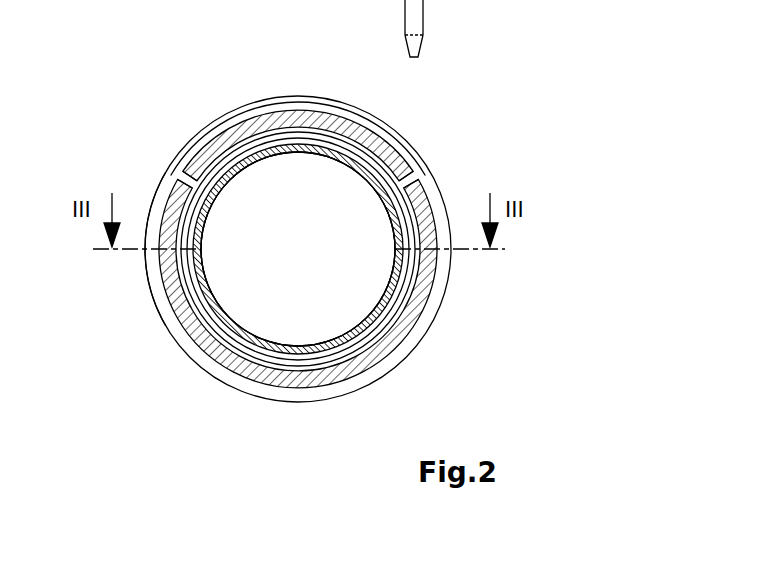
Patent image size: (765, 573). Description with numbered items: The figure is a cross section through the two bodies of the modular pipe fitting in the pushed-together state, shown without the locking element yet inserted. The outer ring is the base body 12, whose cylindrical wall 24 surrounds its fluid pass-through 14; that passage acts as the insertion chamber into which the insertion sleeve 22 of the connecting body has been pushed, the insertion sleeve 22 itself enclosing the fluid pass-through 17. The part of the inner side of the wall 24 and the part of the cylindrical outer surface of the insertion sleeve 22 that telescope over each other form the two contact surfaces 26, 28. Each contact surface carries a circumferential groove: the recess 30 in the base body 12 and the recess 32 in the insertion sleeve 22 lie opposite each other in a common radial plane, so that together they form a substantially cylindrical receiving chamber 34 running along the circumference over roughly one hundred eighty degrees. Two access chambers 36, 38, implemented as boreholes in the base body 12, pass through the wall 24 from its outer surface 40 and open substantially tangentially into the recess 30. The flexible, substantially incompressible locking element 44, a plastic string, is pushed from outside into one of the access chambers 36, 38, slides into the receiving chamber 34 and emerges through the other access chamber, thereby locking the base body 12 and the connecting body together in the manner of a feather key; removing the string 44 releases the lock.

The base body 12 is at (432, 370).
The fluid pass-through 14 is at (298, 249).
The fluid pass-through 17 is at (343, 235).
The insertion sleeve 22 is at (212, 213).
The wall 24 is at (424, 306).
The contact surface 26 is at (275, 141).
The contact surface 28 is at (241, 150).
The recess 30 is at (367, 126).
The recess 32 is at (160, 282).
The receiving chamber 34 is at (422, 212).
The access chamber 36 is at (410, 176).
The access chamber 38 is at (187, 182).
The outer surface 40 is at (337, 103).
The locking element 44 is at (413, 25).